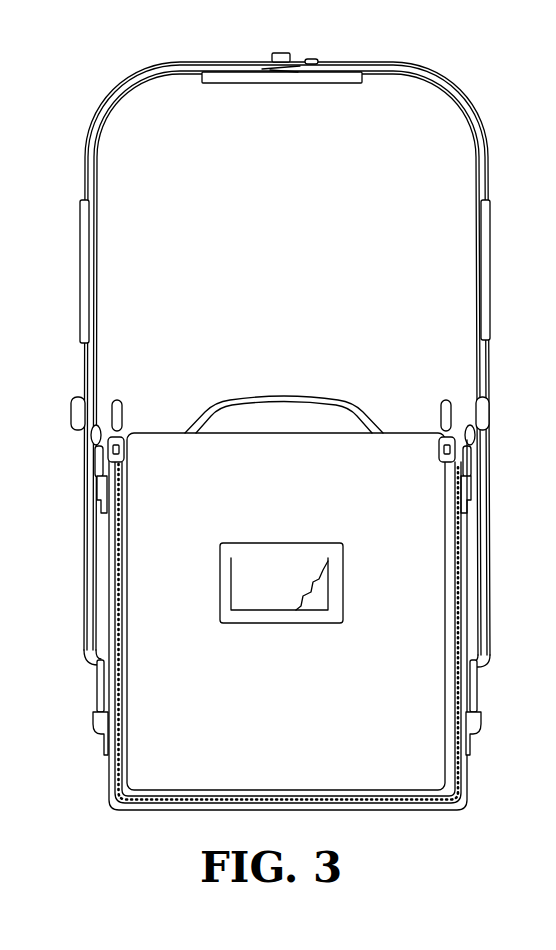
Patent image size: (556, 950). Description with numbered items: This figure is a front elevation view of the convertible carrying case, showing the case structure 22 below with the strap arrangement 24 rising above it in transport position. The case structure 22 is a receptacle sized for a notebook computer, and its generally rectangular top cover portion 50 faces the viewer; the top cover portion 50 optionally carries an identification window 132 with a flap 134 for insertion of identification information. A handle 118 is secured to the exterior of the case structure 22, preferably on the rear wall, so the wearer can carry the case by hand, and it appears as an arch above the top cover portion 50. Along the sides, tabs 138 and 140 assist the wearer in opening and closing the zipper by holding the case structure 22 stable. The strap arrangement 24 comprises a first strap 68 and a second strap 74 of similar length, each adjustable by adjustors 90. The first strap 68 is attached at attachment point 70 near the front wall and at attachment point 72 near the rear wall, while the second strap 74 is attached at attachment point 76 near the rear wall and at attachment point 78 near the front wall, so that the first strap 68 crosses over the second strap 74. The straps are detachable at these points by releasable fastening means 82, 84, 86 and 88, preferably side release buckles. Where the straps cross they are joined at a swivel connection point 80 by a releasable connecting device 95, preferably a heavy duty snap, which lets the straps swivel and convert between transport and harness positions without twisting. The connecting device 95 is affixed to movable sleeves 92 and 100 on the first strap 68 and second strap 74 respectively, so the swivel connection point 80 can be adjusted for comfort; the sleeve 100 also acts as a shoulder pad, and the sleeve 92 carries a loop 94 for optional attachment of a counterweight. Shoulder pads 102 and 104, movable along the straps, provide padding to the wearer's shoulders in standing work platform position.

The case structure 22 is at (127, 813).
The strap arrangement 24 is at (493, 118).
The top cover portion 50 is at (304, 719).
The first strap 68 is at (420, 65).
The attachment point 70 is at (477, 722).
The attachment point 72 is at (99, 497).
The second strap 74 is at (431, 78).
The attachment point 76 is at (470, 494).
The attachment point 78 is at (105, 730).
The swivel connection point 80 is at (248, 77).
The releasable fastening means 82 is at (478, 690).
The releasable fastening means 84 is at (97, 453).
The releasable fastening means 86 is at (472, 452).
The releasable fastening means 88 is at (98, 688).
The adjustors 90 is at (72, 412).
The movable sleeve 92 is at (318, 61).
The loop 94 is at (274, 54).
The releasable connecting device 95 is at (285, 82).
The movable sleeve 100 is at (272, 84).
The shoulder pad 102 is at (483, 283).
The shoulder pad 104 is at (80, 272).
The handle 118 is at (284, 402).
The identification window 132 is at (322, 590).
The flap 134 is at (292, 586).
The tab 138 is at (447, 405).
The tab 140 is at (120, 408).